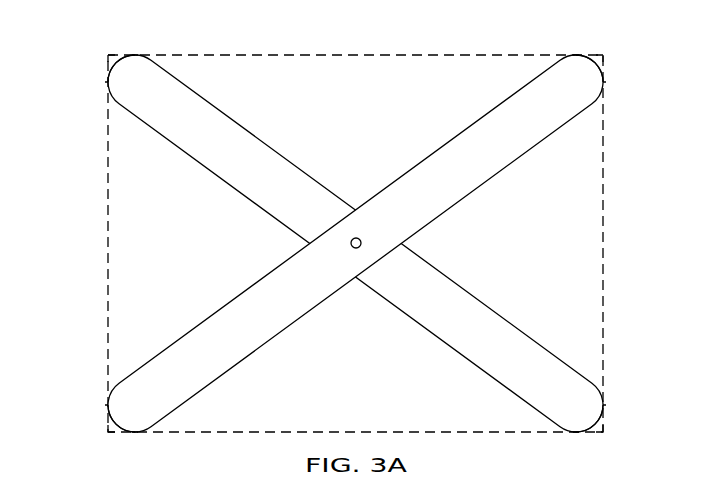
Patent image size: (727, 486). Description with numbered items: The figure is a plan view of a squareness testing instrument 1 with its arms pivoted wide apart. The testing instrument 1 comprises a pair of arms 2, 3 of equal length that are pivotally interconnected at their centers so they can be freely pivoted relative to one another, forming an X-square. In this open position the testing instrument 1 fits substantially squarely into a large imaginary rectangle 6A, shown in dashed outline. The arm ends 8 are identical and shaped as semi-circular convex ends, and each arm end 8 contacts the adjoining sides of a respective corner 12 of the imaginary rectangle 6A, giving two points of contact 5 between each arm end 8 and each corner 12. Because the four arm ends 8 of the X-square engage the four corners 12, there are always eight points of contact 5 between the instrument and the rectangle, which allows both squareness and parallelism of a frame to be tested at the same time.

The testing instrument 1 is at (346, 322).
The arm 2 is at (498, 174).
The arm 3 is at (498, 313).
The points of contact 5 is at (135, 55).
The imaginary rectangle 6A is at (415, 55).
The arm ends 8 is at (141, 92).
The corners 12 is at (108, 55).